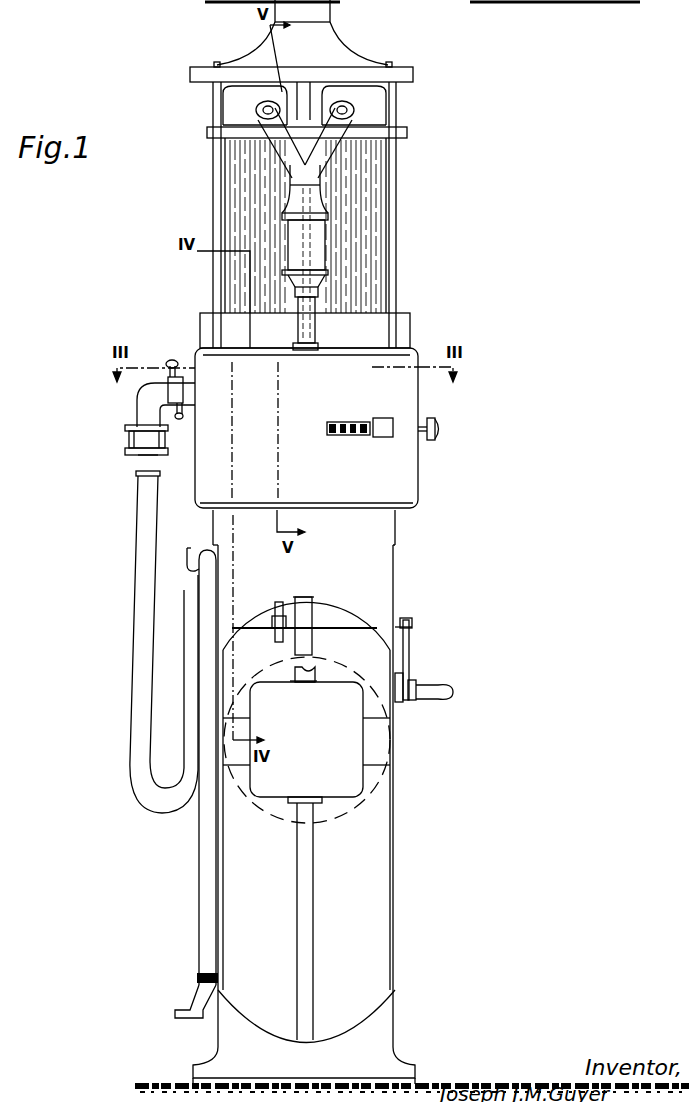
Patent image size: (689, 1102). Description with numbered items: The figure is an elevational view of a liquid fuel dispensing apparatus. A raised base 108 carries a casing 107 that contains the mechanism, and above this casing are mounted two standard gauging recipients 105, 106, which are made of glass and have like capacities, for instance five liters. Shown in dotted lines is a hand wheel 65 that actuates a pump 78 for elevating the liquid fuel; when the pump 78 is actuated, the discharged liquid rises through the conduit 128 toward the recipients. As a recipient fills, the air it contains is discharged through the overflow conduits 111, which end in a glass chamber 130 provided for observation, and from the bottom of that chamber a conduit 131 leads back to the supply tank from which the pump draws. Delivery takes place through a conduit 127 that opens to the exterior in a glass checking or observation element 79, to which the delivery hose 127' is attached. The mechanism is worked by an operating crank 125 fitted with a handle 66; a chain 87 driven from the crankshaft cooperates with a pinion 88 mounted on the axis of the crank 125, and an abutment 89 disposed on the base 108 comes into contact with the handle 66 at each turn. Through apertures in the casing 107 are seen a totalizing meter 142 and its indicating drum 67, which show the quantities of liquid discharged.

The standard gauging recipient 105 is at (366, 193).
The standard gauging recipient 106 is at (242, 206).
The casing 107 is at (393, 485).
The raised base 108 is at (373, 530).
The overflow conduit 111 is at (262, 150).
The operating crank 125 is at (455, 656).
The conduit 127 is at (133, 393).
The delivery hose 127' is at (135, 634).
The conduit 128 is at (318, 682).
The glass chamber 130 is at (314, 238).
The conduit 131 is at (320, 323).
The totalizing meter 142 is at (357, 433).
The hand wheel 65 is at (350, 803).
The handle 66 is at (460, 678).
The indicating drum 67 is at (393, 420).
The pump 78 is at (327, 735).
The checking or observation element 79 is at (143, 440).
The chain 87 is at (277, 608).
The pinion 88 is at (272, 630).
The abutment 89 is at (399, 702).